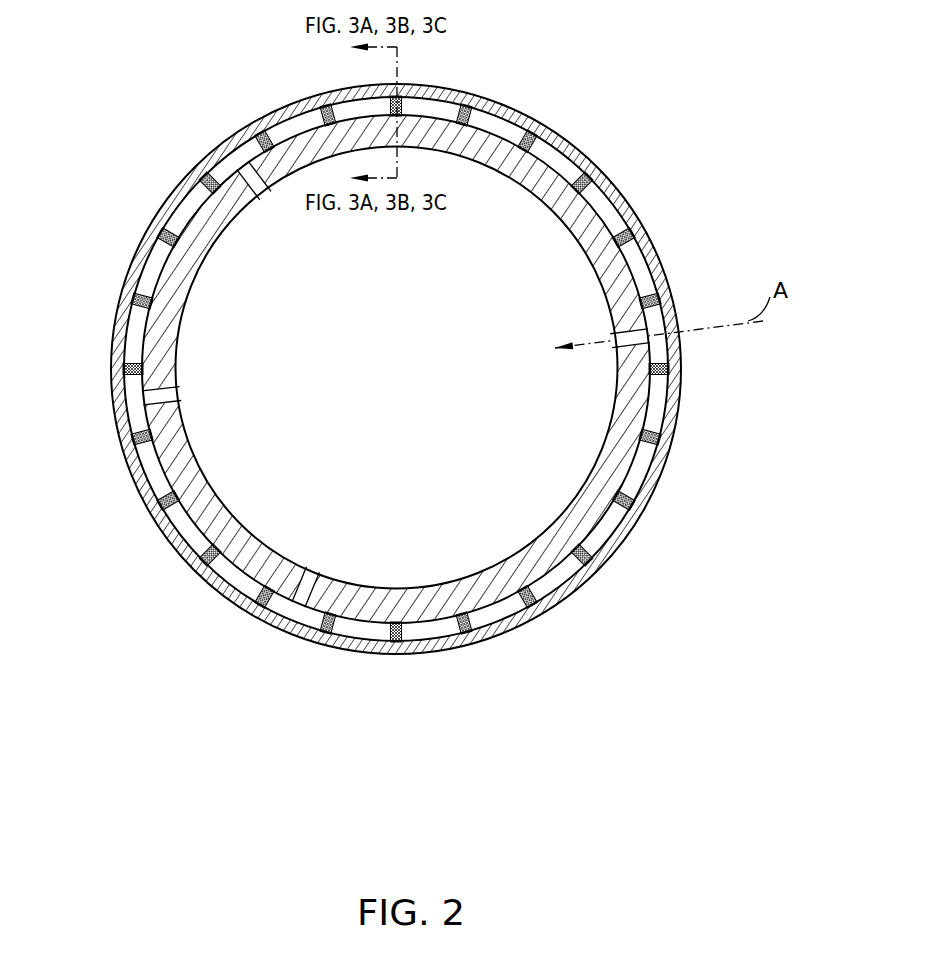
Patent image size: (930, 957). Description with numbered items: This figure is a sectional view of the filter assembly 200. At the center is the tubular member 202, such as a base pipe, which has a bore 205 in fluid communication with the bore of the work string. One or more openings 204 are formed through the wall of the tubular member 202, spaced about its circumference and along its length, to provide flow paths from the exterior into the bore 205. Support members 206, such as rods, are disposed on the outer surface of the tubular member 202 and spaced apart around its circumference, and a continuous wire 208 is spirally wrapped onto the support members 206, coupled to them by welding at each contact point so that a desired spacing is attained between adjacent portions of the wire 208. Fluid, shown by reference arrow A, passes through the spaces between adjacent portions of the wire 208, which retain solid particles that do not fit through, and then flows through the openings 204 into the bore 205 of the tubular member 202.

The filter assembly 200 is at (500, 78).
The tubular member 202 is at (397, 386).
The openings 204 is at (150, 395).
The bore 205 is at (482, 255).
The support members 206 is at (207, 178).
The continuous wire 208 is at (275, 112).